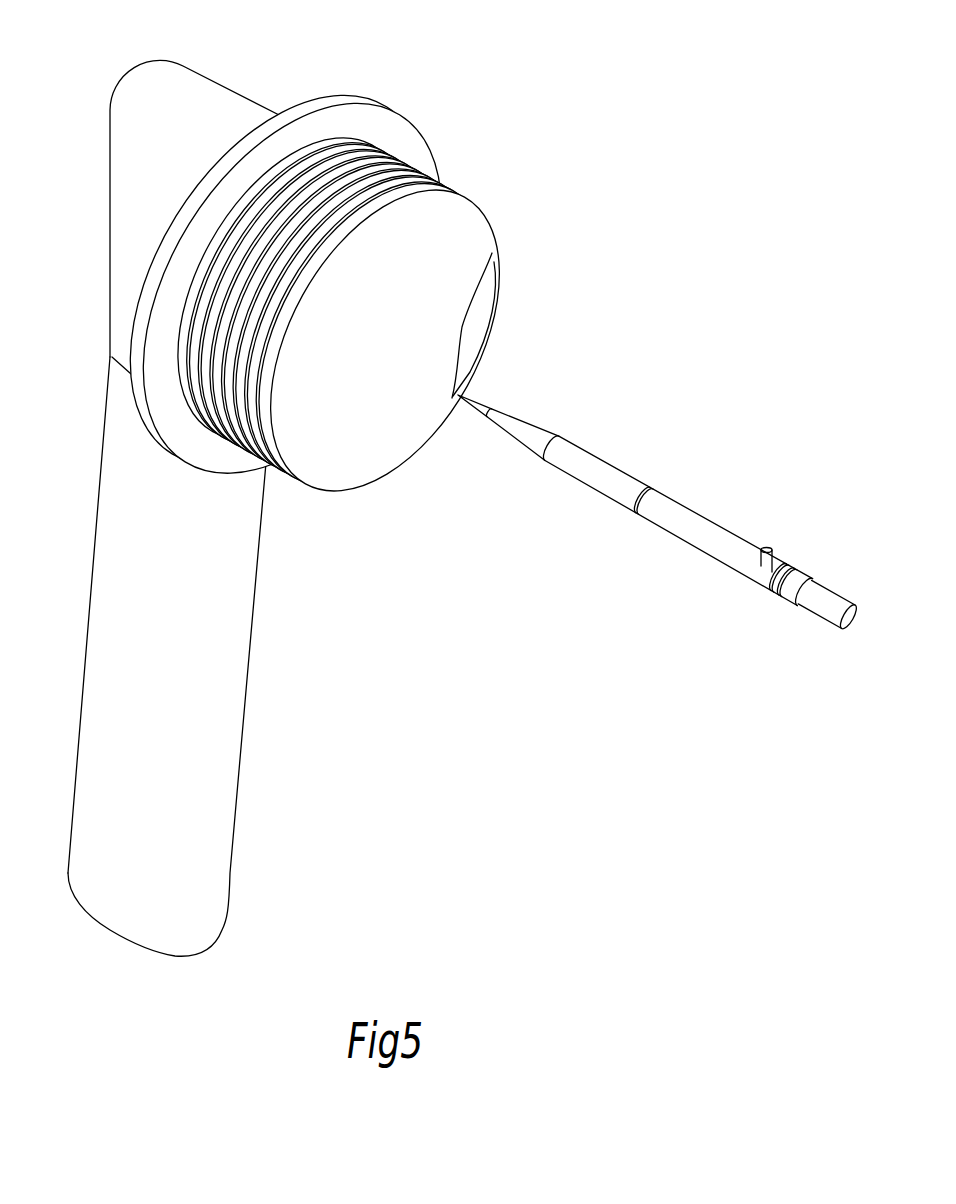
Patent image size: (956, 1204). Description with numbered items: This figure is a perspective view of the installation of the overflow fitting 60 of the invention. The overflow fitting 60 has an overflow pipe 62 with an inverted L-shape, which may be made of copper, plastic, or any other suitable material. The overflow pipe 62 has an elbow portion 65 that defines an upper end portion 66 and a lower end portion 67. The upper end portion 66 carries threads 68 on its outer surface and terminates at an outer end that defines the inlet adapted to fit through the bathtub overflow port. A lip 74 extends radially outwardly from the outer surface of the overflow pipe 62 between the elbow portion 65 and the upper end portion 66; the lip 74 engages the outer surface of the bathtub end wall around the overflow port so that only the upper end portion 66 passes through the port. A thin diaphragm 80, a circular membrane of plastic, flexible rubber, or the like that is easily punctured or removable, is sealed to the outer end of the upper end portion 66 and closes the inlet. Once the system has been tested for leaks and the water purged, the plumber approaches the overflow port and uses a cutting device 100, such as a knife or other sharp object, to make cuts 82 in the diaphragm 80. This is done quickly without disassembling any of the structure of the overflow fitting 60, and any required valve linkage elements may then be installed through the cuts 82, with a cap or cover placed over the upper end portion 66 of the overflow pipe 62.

The overflow fitting 60 is at (287, 499).
The overflow pipe 62 is at (153, 656).
The elbow portion 65 is at (117, 65).
The upper end portion 66 is at (341, 314).
The lower end portion 67 is at (77, 595).
The threads 68 is at (430, 180).
The lip 74 is at (322, 100).
The diaphragm 80 is at (463, 247).
The cuts 82 is at (482, 323).
The cutting device 100 is at (735, 506).